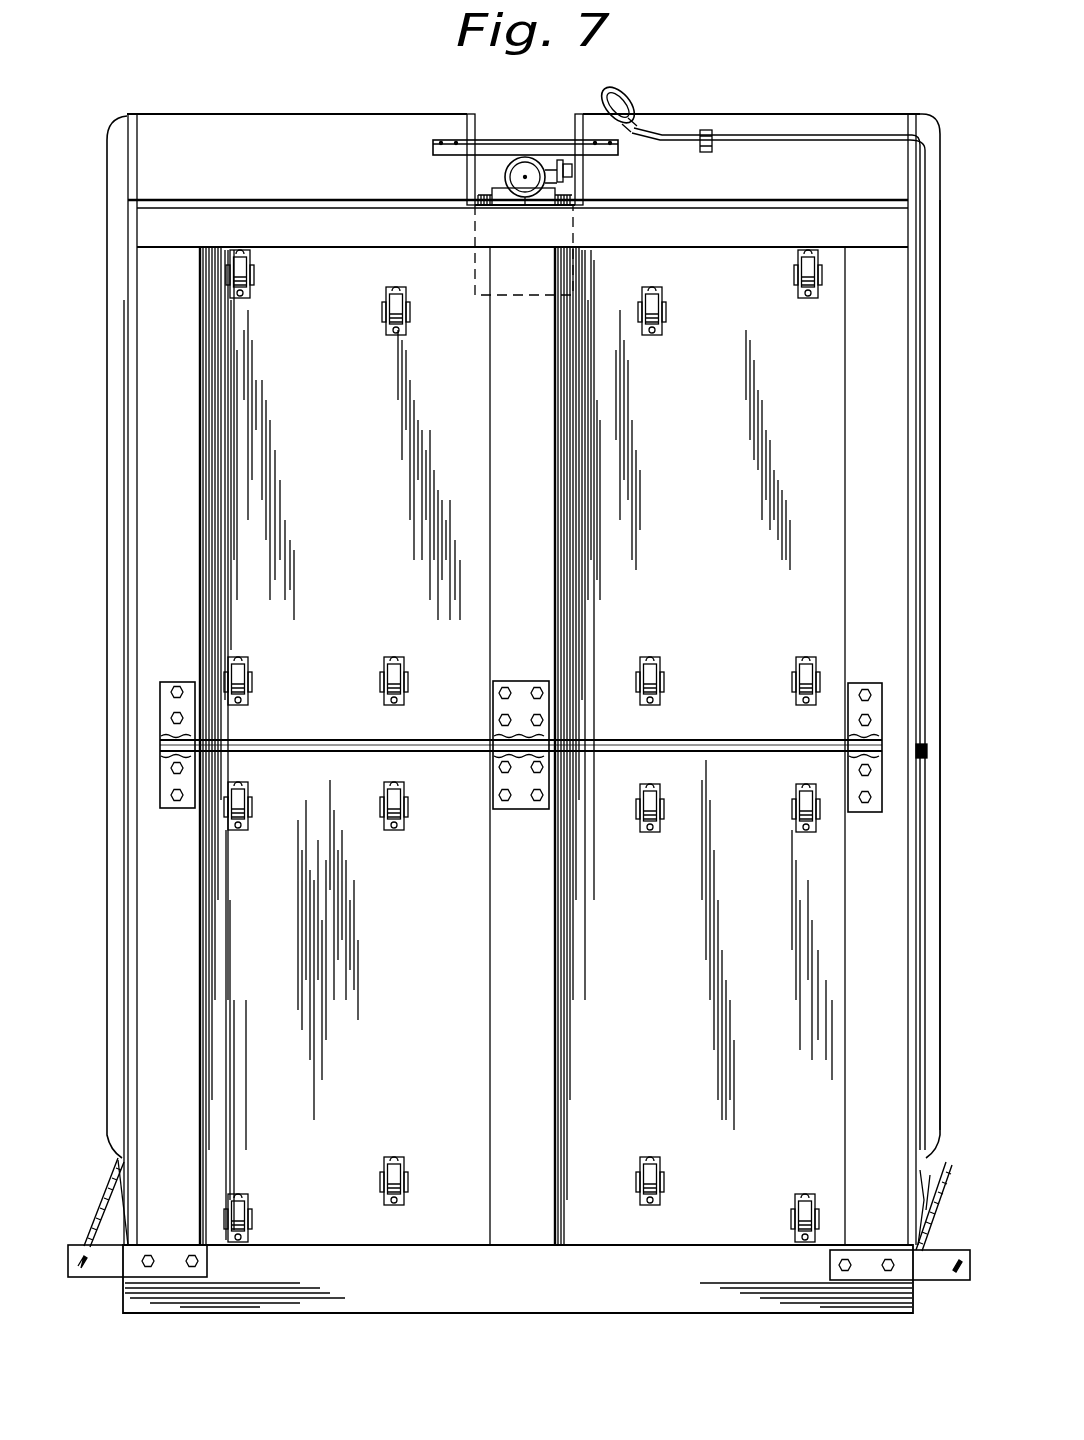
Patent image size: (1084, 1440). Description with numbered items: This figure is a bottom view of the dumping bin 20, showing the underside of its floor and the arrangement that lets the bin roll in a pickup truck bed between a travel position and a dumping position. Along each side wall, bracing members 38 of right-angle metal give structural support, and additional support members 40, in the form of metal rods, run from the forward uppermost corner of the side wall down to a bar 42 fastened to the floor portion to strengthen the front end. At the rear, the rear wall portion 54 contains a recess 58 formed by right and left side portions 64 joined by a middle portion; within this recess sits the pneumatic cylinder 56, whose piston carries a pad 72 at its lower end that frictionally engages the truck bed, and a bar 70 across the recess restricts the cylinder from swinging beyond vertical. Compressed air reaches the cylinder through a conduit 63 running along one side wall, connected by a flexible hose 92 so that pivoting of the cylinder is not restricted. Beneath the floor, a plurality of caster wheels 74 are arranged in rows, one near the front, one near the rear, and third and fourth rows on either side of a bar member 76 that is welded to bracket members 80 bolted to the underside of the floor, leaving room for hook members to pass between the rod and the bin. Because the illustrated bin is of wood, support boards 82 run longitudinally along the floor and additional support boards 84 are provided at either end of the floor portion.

The dumping bin 20 is at (290, 108).
The bracing member 38 is at (936, 572).
The additional support member 40 is at (100, 1200).
The bar 42 is at (100, 1270).
The rear wall portion 54 is at (826, 182).
The pneumatic cylinder 56 is at (505, 173).
The recess 58 is at (562, 122).
The conduit 63 is at (820, 137).
The side portions 64 is at (478, 135).
The bar 70 is at (525, 140).
The pad 72 is at (525, 210).
The wheels 74 is at (243, 275).
The bar member 76 is at (665, 740).
The bracket members 80 is at (878, 688).
The support boards 82 is at (493, 444).
The additional support boards 84 is at (428, 238).
The flexible hose 92 is at (640, 100).